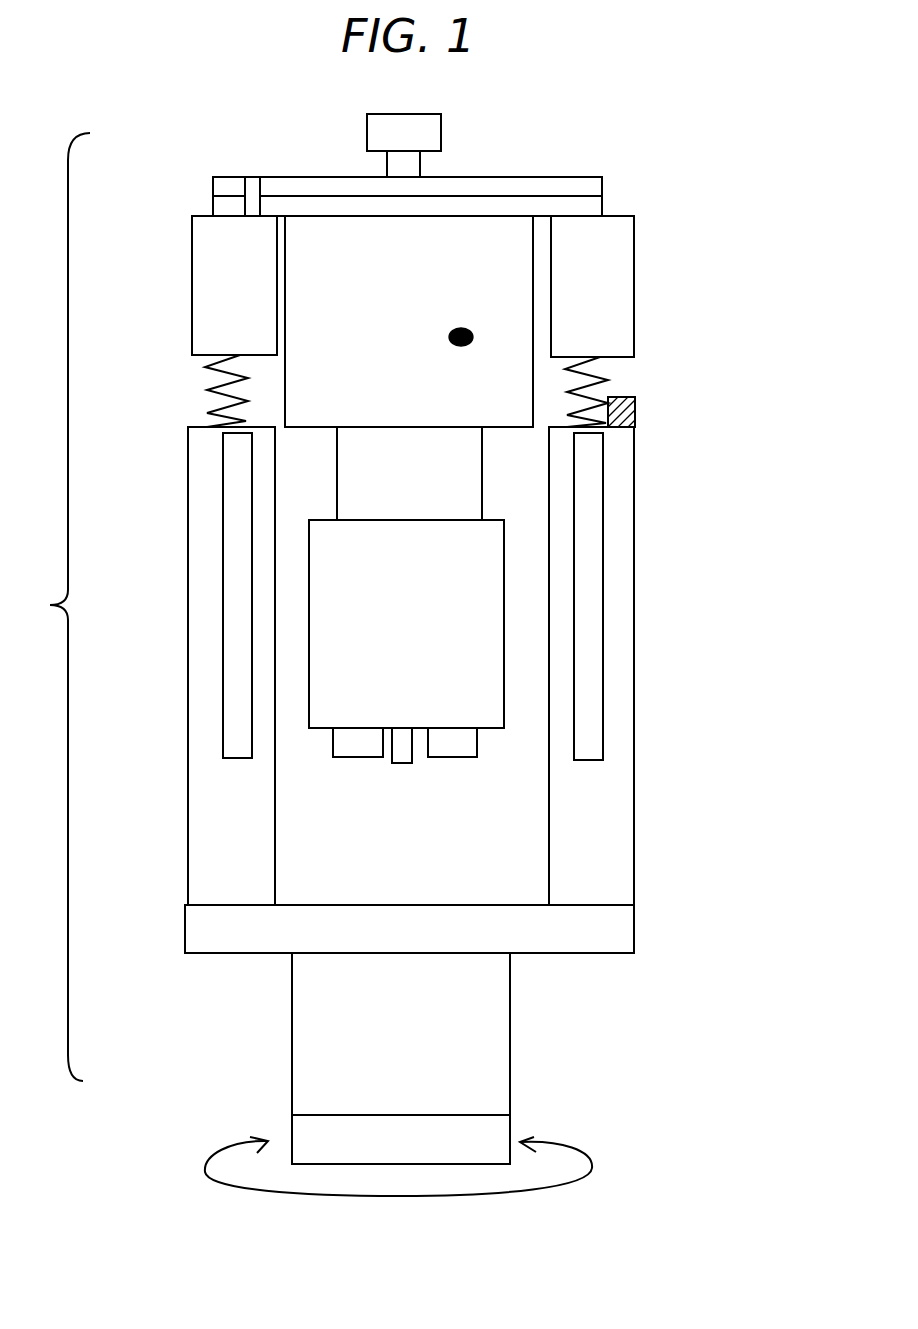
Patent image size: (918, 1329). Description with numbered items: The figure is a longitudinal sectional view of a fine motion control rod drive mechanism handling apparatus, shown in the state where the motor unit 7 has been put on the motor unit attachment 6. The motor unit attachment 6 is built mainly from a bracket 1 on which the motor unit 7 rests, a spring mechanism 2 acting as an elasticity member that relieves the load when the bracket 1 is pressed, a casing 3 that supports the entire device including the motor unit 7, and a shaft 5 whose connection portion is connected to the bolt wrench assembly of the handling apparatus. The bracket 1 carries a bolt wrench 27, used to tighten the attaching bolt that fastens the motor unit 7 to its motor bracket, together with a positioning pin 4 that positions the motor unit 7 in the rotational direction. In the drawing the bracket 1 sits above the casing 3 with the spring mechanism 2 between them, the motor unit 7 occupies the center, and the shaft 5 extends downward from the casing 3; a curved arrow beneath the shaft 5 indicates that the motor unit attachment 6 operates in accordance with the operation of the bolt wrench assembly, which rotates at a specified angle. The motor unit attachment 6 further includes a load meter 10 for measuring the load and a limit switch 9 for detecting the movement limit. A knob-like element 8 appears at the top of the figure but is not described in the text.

The bracket 1 is at (192, 290).
The spring mechanism 2 is at (205, 388).
The casing 3 is at (188, 505).
The positioning pin 4 is at (213, 203).
The shaft 5 is at (292, 1015).
The motor unit attachment 6 is at (58, 607).
The motor unit 7 is at (472, 337).
The knob 8 is at (441, 133).
The limit switch 9 is at (635, 410).
The load meter 10 is at (490, 1138).
The bolt wrench 27 is at (603, 530).